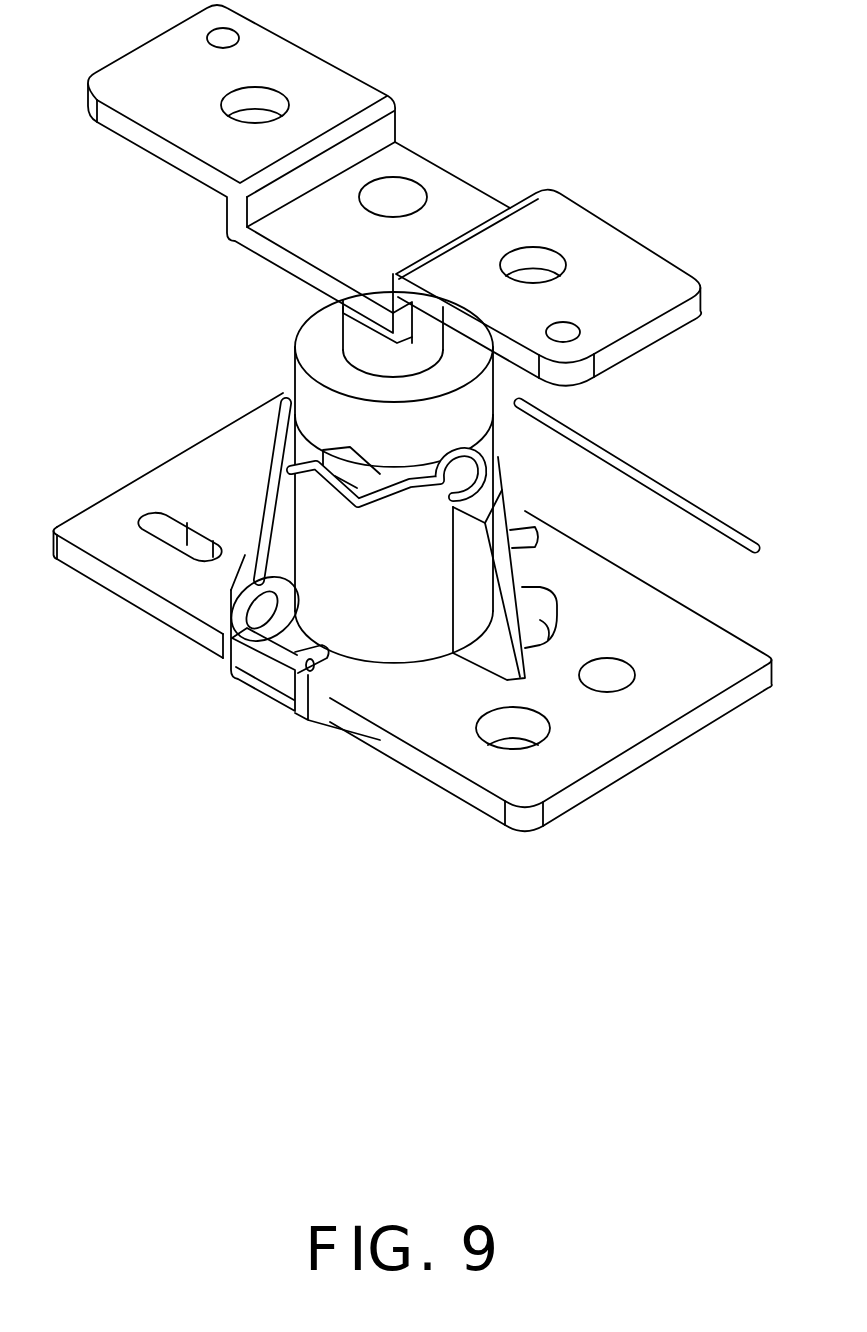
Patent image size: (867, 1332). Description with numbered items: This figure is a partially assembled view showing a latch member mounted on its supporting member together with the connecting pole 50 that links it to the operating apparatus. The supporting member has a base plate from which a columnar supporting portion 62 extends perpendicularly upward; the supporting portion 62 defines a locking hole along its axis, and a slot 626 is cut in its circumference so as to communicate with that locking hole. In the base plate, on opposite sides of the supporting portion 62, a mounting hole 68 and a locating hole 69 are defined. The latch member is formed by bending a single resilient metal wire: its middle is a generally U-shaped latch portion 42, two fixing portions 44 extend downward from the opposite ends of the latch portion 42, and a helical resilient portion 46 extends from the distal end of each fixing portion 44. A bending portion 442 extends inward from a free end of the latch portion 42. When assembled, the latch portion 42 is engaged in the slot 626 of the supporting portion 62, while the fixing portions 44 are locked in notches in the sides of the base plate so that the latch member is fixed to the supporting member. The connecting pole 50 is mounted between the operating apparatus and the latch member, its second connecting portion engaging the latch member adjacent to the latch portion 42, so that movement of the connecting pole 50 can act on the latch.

The supporting portion 62 is at (310, 352).
The slot 626 is at (340, 455).
The locating hole 69 is at (163, 533).
The resilient portion 46 is at (240, 592).
The fixing portion 44 is at (284, 691).
The bending portion 442 is at (313, 660).
The mounting hole 68 is at (533, 733).
The connecting pole 50 is at (583, 442).
The latch portion 42 is at (467, 473).